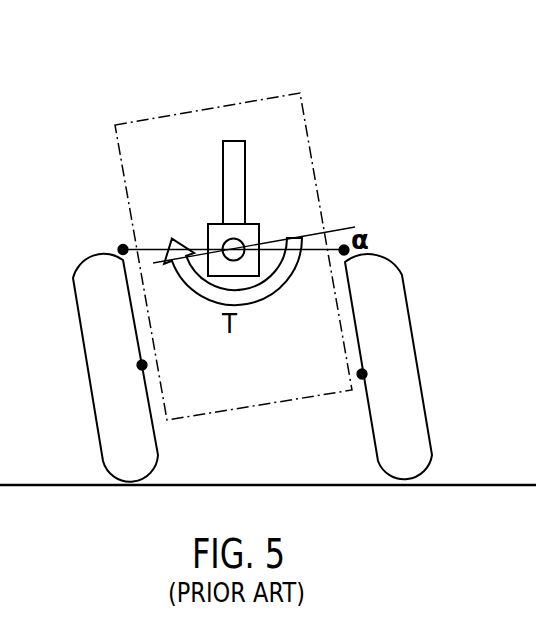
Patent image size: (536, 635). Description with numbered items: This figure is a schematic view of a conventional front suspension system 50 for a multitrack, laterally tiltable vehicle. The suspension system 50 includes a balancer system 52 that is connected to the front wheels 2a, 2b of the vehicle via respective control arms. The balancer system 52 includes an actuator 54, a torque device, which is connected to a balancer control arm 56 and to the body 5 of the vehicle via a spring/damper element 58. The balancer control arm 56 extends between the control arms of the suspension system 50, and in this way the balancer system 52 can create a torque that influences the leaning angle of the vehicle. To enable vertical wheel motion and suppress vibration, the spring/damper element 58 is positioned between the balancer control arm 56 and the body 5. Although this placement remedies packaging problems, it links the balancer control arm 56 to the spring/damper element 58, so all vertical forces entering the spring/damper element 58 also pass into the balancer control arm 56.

The suspension system 50 is at (403, 70).
The body 5 is at (212, 107).
The spring/damper element 58 is at (235, 150).
The balancer system 52 is at (258, 207).
The actuator 54 is at (207, 230).
The balancer control arm 56 is at (138, 250).
The front wheel 2a is at (130, 475).
The front wheel 2b is at (405, 477).